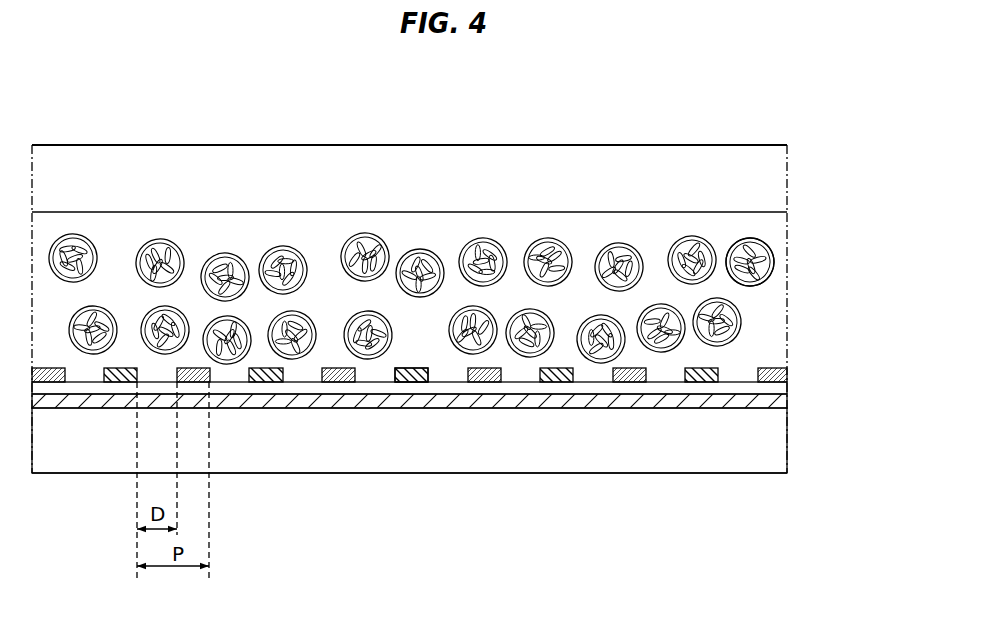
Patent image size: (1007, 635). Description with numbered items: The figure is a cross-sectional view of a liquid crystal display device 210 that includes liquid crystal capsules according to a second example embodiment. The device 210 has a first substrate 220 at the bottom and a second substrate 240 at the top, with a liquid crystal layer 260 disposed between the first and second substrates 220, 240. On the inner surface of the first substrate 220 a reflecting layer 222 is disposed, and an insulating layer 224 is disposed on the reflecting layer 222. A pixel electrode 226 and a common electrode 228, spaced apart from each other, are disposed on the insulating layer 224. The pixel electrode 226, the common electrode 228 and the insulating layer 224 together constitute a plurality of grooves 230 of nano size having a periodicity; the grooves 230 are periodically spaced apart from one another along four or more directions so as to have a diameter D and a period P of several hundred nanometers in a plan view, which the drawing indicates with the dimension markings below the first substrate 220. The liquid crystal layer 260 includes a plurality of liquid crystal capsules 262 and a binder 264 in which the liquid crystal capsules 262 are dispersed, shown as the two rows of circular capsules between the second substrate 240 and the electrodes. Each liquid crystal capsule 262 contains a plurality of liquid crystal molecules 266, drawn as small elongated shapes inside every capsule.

The liquid crystal display device 210 is at (425, 84).
The first substrate 220 is at (777, 438).
The reflecting layer 222 is at (777, 400).
The insulating layer 224 is at (777, 385).
The pixel electrode 226 is at (343, 375).
The common electrode 228 is at (415, 375).
The groove 230 is at (437, 366).
The second substrate 240 is at (777, 169).
The liquid crystal layer 260 is at (495, 297).
The liquid crystal capsule 262 is at (774, 272).
The binder 264 is at (772, 307).
The liquid crystal molecule 266 is at (768, 244).